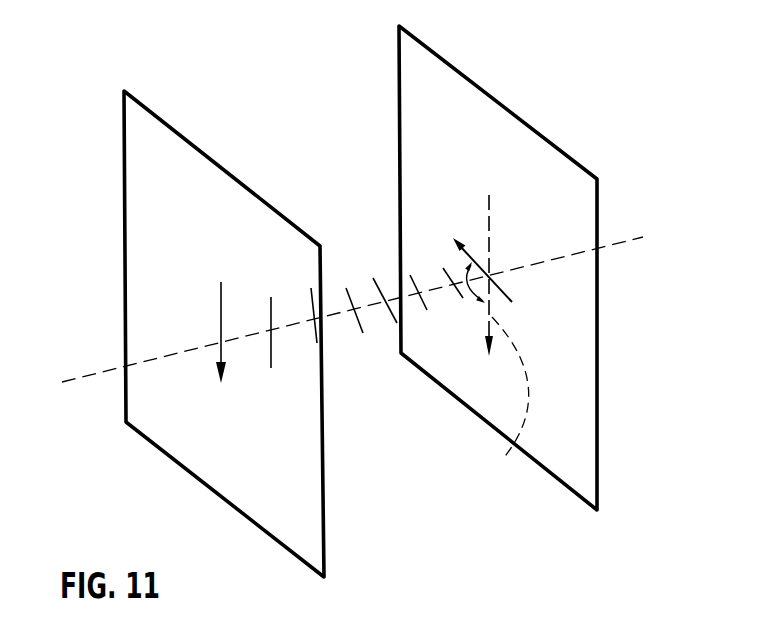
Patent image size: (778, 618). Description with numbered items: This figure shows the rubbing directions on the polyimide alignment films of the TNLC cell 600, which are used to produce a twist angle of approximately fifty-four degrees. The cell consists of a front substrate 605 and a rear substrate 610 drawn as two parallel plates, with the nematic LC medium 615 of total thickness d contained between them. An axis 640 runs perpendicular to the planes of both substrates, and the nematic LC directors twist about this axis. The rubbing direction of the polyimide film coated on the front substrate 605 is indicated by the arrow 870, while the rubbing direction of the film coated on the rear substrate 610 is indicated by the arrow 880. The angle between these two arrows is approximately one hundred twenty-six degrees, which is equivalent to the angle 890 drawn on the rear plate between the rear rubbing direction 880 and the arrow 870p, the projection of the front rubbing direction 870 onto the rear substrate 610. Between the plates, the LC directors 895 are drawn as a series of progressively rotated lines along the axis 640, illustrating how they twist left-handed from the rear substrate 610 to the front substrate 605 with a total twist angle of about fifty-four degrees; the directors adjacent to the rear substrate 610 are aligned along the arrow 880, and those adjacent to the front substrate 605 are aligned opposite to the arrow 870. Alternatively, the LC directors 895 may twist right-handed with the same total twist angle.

The TNLC cell 600 is at (653, 487).
The front substrate 605 is at (297, 543).
The rear substrate 610 is at (573, 478).
The nematic LC medium 615 is at (430, 497).
The axis 640 is at (95, 372).
The arrow (front rubbing direction) 870 is at (220, 303).
The projection of the front rubbing direction 870p is at (503, 344).
The arrow (rear rubbing direction) 880 is at (455, 237).
The angle 890 is at (474, 296).
The LC directors 895 is at (384, 296).